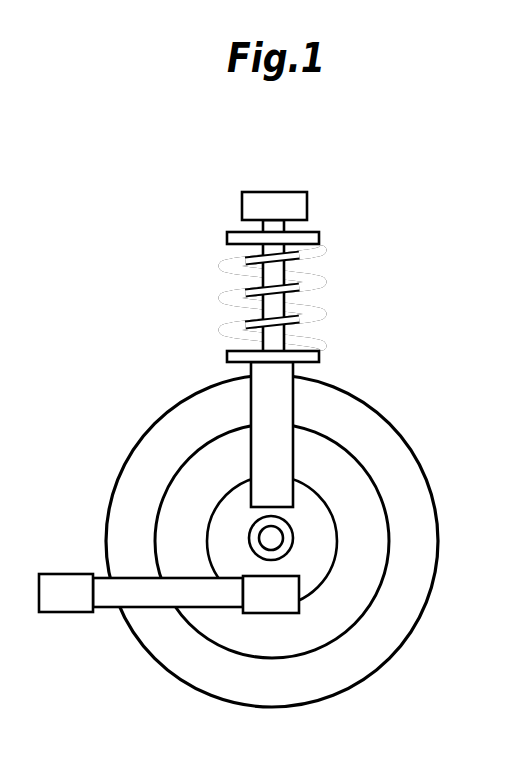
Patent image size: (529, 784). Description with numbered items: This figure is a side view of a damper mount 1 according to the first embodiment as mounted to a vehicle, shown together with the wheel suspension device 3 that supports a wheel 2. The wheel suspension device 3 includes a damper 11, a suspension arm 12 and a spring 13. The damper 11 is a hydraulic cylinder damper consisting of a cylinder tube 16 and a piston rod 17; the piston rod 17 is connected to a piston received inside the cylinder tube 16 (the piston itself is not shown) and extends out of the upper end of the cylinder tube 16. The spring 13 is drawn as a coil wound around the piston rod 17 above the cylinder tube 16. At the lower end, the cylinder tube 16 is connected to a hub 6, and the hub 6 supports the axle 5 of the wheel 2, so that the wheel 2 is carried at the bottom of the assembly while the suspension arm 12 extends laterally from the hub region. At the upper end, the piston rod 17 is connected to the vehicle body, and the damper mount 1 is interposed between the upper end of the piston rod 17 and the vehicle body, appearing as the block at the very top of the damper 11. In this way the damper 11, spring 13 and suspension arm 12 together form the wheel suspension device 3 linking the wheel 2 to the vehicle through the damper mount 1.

The damper mount 1 is at (290, 192).
The wheel 2 is at (440, 537).
The wheel suspension device 3 is at (247, 335).
The axle 5 is at (271, 550).
The hub 6 is at (205, 538).
The damper 11 is at (252, 363).
The suspension arm 12 is at (137, 608).
The spring 13 is at (325, 251).
The cylinder tube 16 is at (293, 394).
The piston rod 17 is at (290, 303).